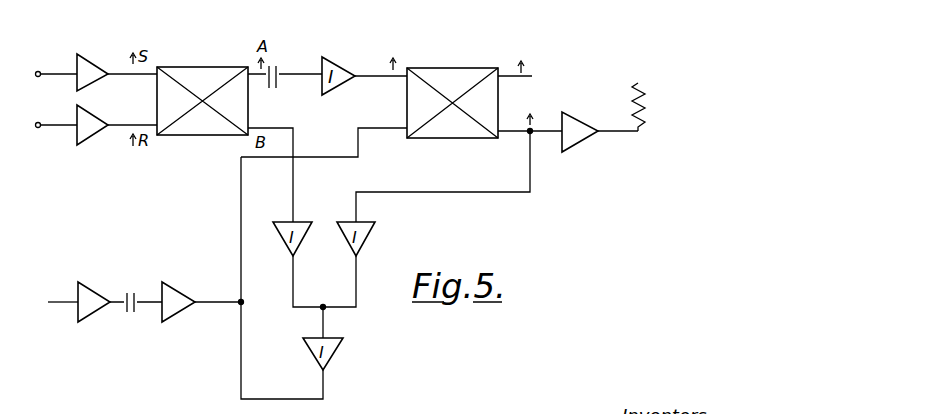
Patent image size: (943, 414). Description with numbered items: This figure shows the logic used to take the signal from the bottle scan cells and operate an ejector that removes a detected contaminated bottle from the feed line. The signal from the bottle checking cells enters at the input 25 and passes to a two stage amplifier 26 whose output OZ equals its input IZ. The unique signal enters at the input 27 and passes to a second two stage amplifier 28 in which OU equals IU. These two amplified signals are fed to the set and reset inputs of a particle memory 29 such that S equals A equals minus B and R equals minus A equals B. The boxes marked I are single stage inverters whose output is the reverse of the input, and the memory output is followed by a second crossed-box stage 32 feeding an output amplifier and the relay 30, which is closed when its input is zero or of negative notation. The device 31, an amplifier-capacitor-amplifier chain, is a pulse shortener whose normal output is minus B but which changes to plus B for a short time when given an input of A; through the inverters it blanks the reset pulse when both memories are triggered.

The signal input 25 is at (57, 64).
The two stage amplifier 26 is at (93, 70).
The unique signal input 27 is at (57, 116).
The two stage amplifier 28 is at (93, 125).
The particle memory 29 is at (202, 126).
The relay 30 is at (626, 107).
The pulse shortener 31 is at (195, 328).
The second bistable stage 32 is at (458, 127).